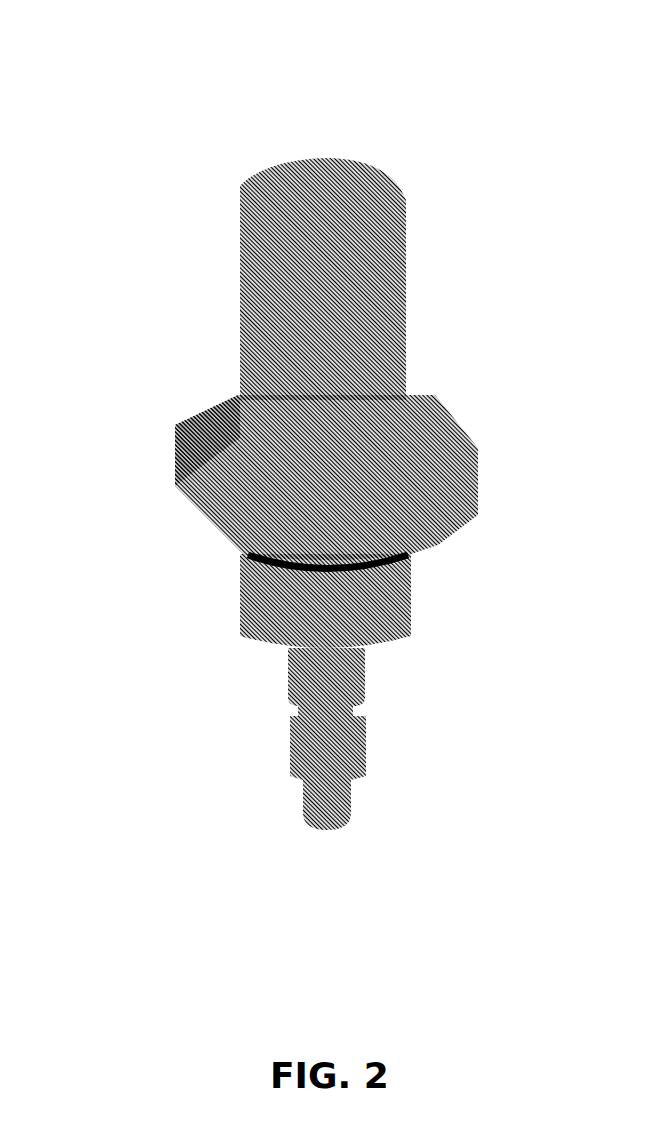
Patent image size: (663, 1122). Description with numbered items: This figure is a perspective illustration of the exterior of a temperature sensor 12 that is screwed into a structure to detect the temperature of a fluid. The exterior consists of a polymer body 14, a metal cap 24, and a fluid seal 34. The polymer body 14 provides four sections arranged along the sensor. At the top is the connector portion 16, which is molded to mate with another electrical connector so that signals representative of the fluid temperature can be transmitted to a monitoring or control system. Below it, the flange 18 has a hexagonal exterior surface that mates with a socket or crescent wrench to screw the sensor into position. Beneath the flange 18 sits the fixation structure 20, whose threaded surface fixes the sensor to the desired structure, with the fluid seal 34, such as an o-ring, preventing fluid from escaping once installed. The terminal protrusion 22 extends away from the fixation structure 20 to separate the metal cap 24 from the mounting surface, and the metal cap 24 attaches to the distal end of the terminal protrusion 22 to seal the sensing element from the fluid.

The temperature sensor 12 is at (80, 100).
The polymer body 14 is at (183, 411).
The connector portion 16 is at (430, 288).
The flange 18 is at (474, 470).
The fixation structure 20 is at (408, 580).
The terminal protrusion 22 is at (275, 668).
The metal cap 24 is at (340, 770).
The fluid seal 34 is at (240, 546).